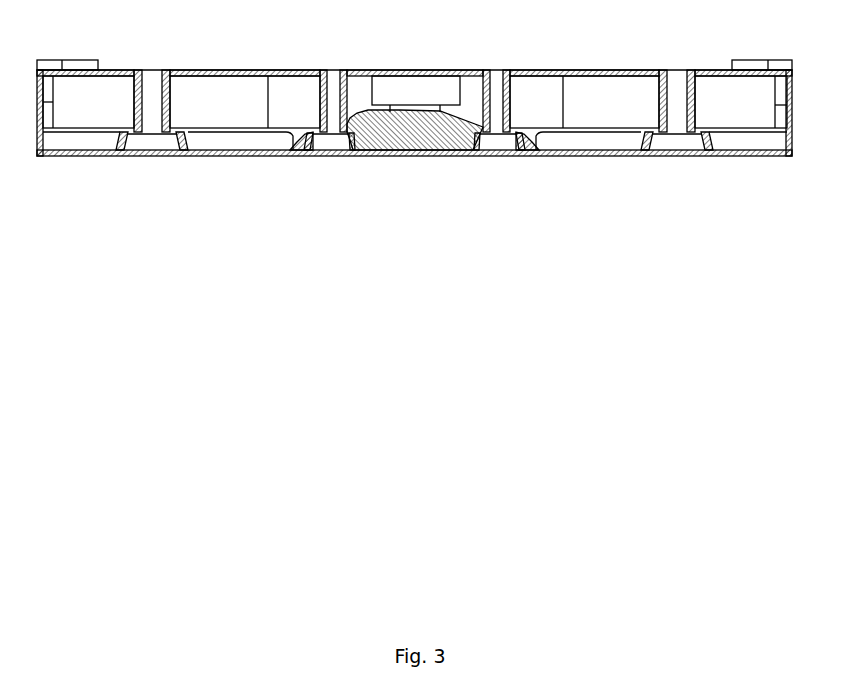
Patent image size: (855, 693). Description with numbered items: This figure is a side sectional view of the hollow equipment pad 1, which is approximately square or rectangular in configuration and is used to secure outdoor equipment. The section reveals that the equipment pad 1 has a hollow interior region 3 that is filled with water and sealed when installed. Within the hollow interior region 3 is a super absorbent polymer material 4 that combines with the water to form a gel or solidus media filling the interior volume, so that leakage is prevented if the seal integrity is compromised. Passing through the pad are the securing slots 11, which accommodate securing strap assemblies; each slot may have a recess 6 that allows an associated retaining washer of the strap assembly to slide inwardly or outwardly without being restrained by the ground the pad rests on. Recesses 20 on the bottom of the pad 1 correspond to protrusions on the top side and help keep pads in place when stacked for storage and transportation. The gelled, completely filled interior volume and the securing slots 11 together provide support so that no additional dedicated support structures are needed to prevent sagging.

The equipment pad 1 is at (562, 70).
The hollow interior region 3 is at (244, 101).
The super absorbent polymer material 4 is at (412, 133).
The recess 6 is at (182, 133).
The securing slots 11 is at (162, 112).
The recesses 20 is at (70, 60).